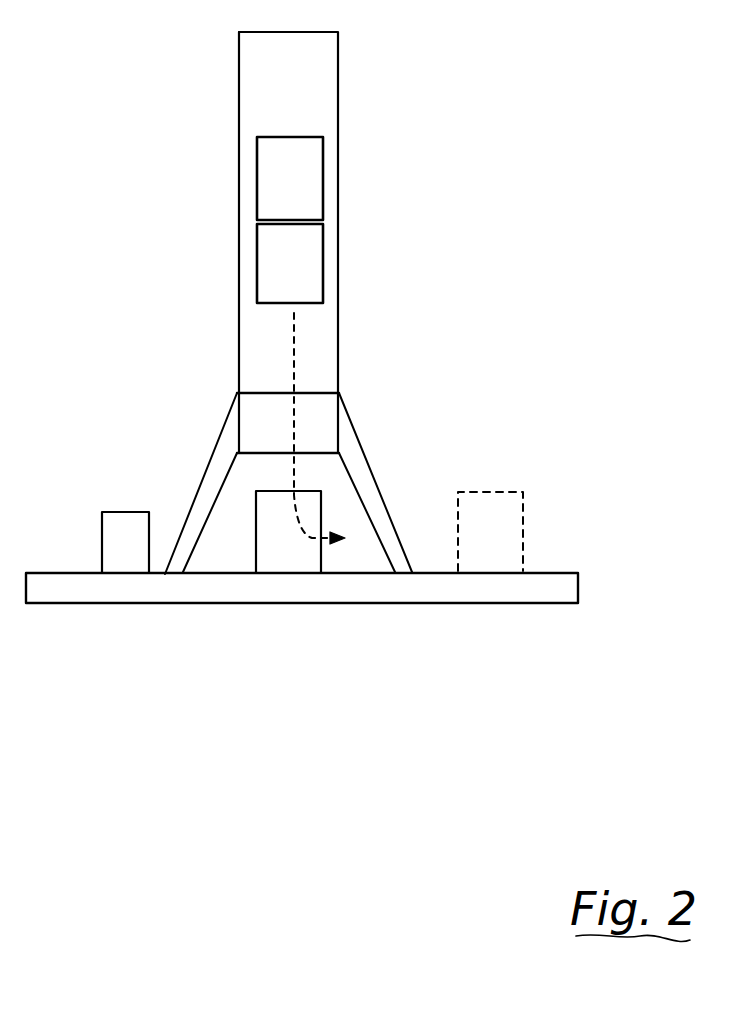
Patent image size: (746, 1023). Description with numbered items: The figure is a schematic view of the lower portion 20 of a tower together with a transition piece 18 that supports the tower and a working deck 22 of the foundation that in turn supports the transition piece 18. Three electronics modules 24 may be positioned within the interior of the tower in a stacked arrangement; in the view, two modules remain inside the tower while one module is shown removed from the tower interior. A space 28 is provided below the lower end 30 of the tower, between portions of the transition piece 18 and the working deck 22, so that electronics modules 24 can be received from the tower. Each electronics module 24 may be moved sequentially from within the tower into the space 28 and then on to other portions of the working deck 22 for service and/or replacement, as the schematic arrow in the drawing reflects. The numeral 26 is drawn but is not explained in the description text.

The transition piece 18 is at (322, 422).
The lower portion of the tower 20 is at (338, 215).
The working deck 22 is at (555, 572).
The electronics modules 24 is at (310, 165).
The column 26 is at (263, 338).
The space 28 is at (337, 510).
The lower end of the tower 30 is at (237, 393).